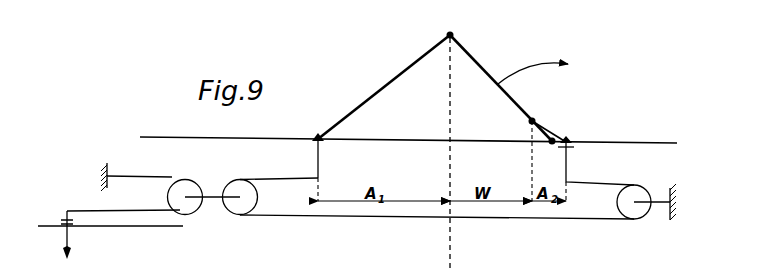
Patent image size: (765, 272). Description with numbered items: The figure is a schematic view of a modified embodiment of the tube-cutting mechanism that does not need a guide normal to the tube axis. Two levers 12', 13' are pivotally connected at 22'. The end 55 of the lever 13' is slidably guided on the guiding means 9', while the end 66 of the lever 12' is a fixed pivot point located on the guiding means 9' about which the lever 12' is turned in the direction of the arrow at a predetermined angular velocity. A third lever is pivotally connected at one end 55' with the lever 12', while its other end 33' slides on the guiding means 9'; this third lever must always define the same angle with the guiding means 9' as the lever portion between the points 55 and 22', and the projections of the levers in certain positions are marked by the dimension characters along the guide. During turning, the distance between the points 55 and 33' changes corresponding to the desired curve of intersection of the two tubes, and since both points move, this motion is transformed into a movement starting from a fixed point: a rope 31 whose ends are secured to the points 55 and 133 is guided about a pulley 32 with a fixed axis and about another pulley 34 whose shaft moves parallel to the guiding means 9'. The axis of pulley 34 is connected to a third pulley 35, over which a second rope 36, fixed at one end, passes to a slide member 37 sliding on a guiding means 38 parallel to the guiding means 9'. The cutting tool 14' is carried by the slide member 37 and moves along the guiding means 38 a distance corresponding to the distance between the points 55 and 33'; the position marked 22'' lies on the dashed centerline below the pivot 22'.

The pivot connection 22' is at (470, 24).
The lever 13' is at (384, 87).
The lever 12' is at (501, 88).
The end of lever 13' 55 is at (314, 141).
The pivot end of third lever 55' is at (552, 108).
The sliding end of third lever 33' is at (573, 133).
The fixed pivot point 66 is at (549, 145).
The guiding means 9' is at (439, 155).
The second rope 36 is at (147, 175).
The slide member 37 is at (65, 218).
The guiding means 38 is at (133, 228).
The cutting tool 14' is at (86, 259).
The third pulley 35 is at (193, 208).
The pulley 34 is at (248, 209).
The rope 31 is at (553, 219).
The pulley 32 is at (637, 219).
The rope attachment point 133 is at (568, 180).
The apex position 22'' is at (452, 269).